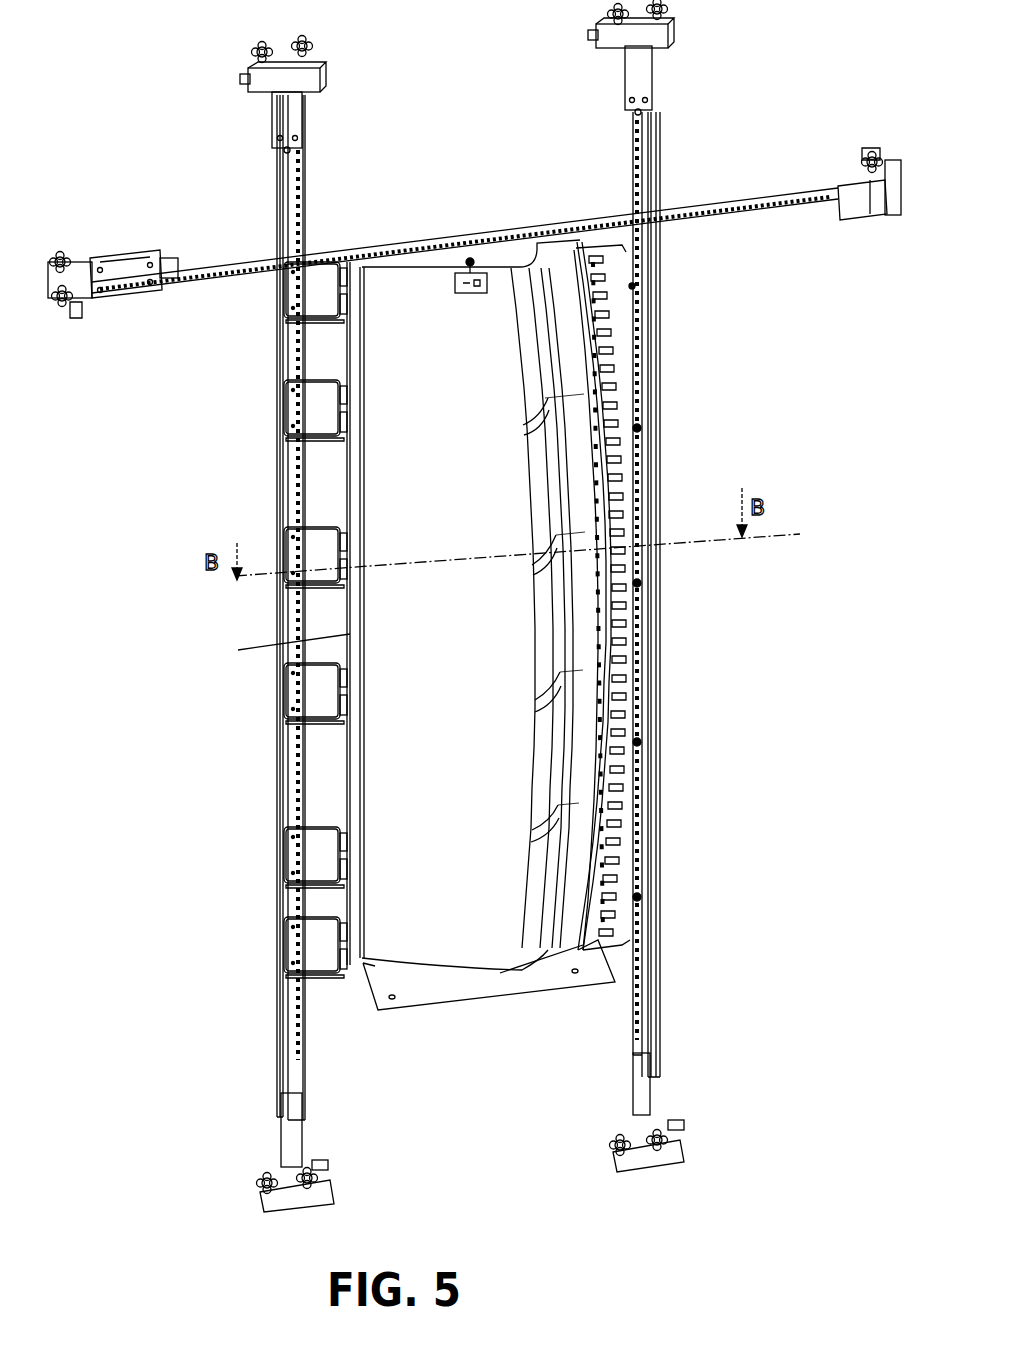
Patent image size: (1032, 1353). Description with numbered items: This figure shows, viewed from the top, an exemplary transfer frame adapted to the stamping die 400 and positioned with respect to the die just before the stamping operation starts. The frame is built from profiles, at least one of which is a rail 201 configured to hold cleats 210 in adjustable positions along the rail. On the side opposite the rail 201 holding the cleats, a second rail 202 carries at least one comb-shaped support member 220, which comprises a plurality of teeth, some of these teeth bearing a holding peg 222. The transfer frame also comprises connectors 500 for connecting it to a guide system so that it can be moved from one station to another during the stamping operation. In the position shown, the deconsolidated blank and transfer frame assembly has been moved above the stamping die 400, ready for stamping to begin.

The connectors 500 is at (72, 268).
The rail 201 is at (282, 778).
The rail 202 is at (660, 862).
The cleats 210 is at (280, 869).
The comb-shaped support member 220 is at (634, 777).
The holding peg 222 is at (612, 278).
The stamping die 400 is at (513, 985).